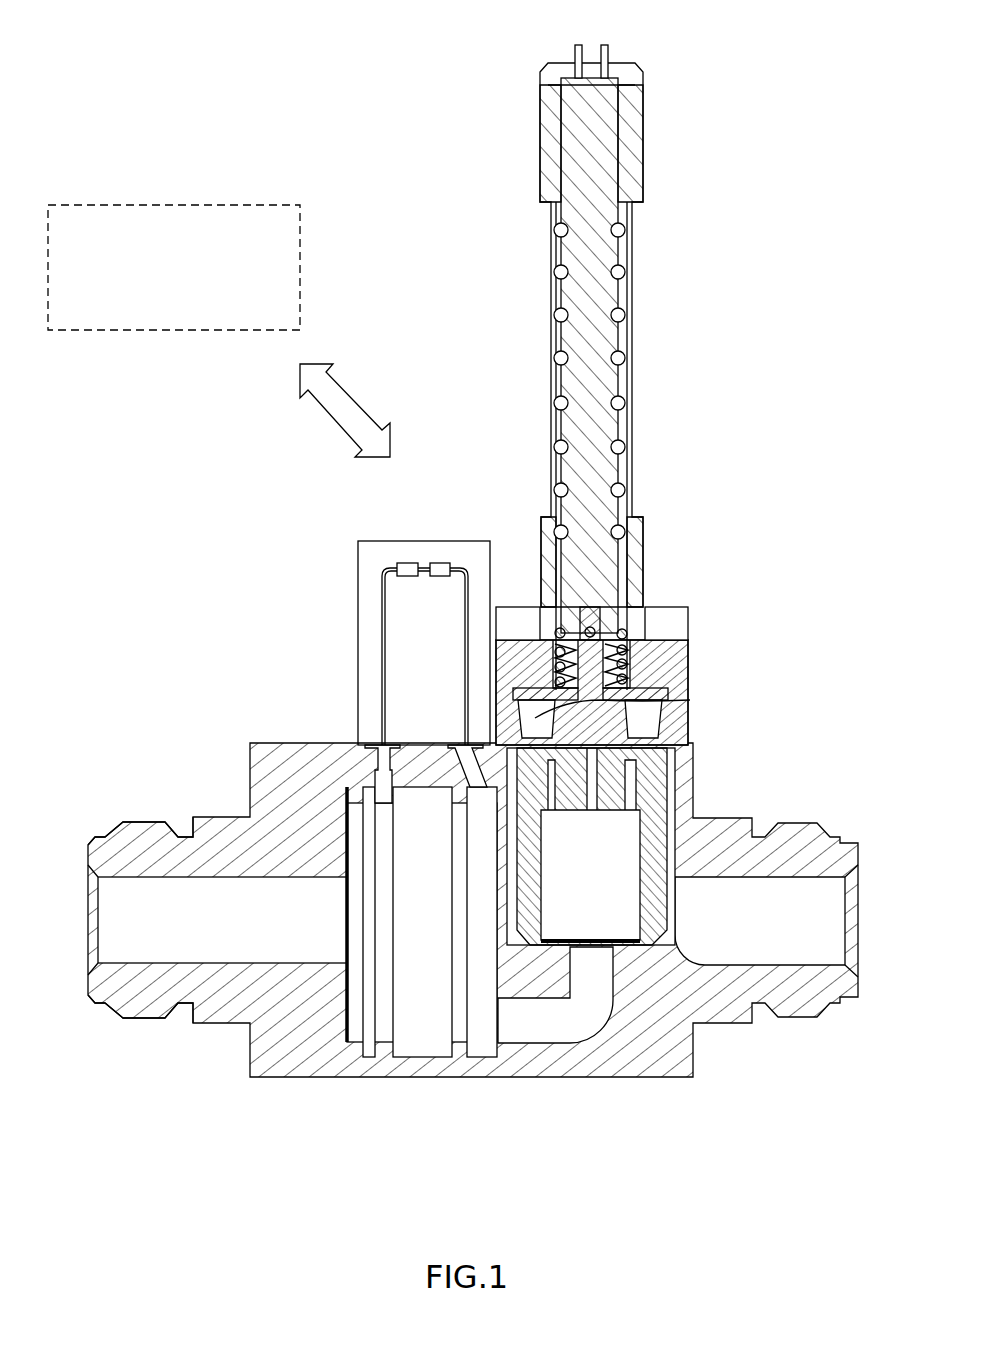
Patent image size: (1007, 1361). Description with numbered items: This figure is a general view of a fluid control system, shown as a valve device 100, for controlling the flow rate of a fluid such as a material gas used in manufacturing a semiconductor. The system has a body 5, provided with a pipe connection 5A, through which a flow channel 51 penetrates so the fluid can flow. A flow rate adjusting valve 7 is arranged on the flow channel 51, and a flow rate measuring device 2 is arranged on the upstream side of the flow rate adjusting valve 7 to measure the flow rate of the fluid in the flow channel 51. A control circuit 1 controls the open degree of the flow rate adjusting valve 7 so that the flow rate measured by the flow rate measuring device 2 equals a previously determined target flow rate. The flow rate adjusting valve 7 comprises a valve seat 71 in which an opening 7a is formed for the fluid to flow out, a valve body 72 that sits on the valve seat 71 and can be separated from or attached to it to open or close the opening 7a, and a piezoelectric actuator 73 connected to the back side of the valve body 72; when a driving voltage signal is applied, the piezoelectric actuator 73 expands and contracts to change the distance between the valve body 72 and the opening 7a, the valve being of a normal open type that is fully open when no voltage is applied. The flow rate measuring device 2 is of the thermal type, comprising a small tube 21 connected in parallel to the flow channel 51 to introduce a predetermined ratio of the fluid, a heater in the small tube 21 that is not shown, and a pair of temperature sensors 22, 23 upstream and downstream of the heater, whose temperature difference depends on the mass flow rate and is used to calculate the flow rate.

The valve device 100 is at (300, 125).
The control circuit 1 is at (155, 331).
The flow rate measuring device 2 is at (376, 609).
The small tube 21 is at (382, 635).
The temperature sensor 22 is at (410, 563).
The temperature sensor 23 is at (440, 563).
The body 5 is at (445, 958).
The pipe connection 5A is at (96, 840).
The flow channel 51 is at (263, 932).
The flow rate adjusting valve 7 is at (602, 495).
The opening 7a is at (565, 713).
The valve seat 71 is at (652, 792).
The valve body 72 is at (655, 720).
The piezoelectric actuator 73 is at (640, 456).